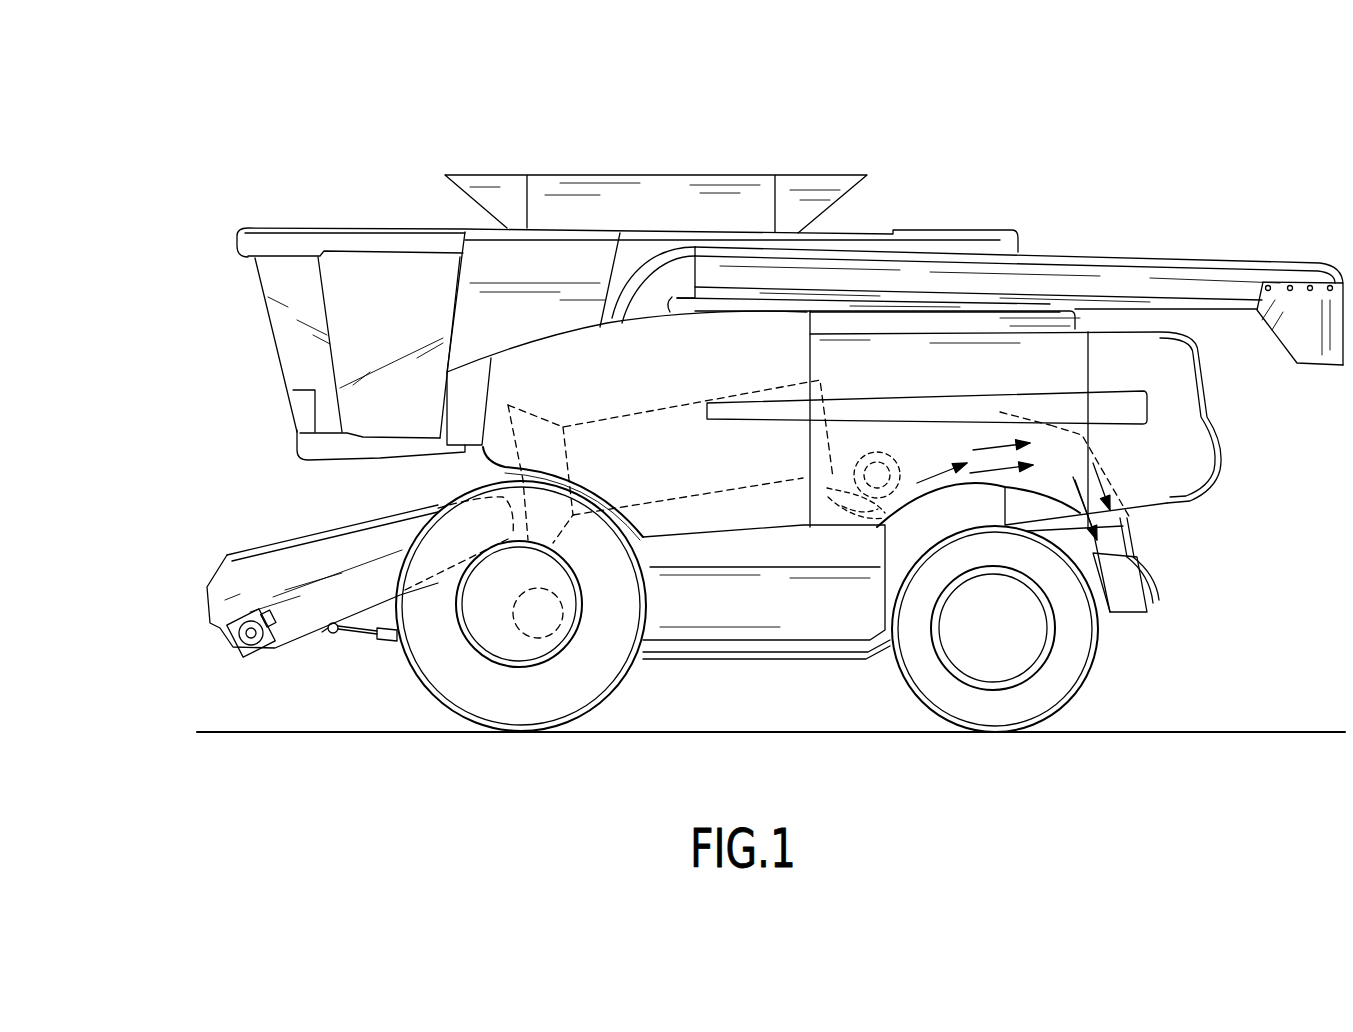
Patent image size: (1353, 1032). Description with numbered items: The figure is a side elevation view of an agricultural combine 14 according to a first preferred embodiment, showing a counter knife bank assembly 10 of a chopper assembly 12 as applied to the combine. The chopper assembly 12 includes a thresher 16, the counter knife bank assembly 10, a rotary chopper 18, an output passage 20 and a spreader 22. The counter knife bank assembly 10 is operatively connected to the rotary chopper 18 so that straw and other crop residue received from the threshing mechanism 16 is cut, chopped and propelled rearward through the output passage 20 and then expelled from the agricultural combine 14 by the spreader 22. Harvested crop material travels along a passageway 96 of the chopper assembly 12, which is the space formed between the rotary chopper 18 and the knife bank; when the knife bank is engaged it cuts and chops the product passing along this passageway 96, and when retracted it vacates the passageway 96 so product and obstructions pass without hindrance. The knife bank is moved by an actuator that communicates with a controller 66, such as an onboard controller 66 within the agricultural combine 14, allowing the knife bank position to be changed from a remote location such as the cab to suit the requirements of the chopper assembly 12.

The counter knife bank assembly 10 is at (840, 512).
The chopper assembly 12 is at (860, 347).
The agricultural combine 14 is at (325, 142).
The thresher 16 is at (630, 413).
The rotary chopper 18 is at (888, 457).
The output passage 20 is at (1127, 509).
The spreader 22 is at (1132, 612).
The controller 66 is at (295, 415).
The passageway 96 is at (843, 487).